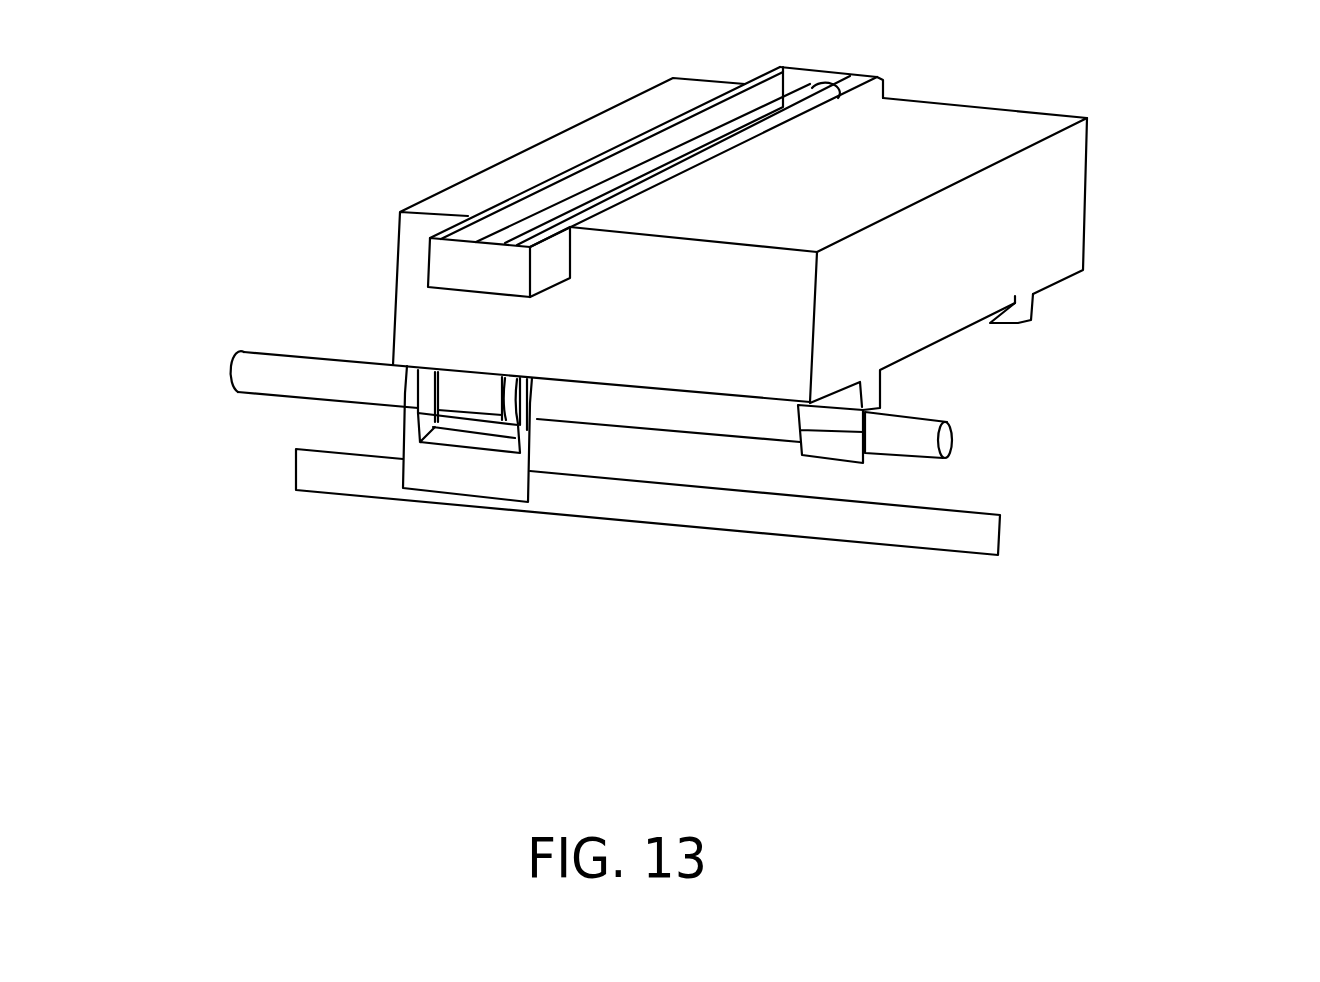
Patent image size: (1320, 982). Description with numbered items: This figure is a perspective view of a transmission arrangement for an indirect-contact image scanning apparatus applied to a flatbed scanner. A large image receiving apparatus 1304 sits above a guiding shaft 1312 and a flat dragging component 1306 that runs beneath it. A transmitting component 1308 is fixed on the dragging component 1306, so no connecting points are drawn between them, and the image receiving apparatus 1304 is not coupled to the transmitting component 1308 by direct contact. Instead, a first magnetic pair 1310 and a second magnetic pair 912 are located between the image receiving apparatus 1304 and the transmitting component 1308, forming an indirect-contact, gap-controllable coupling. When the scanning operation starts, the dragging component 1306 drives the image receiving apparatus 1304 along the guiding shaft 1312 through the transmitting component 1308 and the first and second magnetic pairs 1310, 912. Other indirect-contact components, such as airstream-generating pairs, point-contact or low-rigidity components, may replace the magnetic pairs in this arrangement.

The image receiving apparatus 1304 is at (1062, 202).
The dragging component 1306 is at (940, 533).
The transmitting component 1308 is at (453, 478).
The first magnetic pair 1310 is at (424, 432).
The guiding shaft 1312 is at (923, 427).
The second magnetic pair 912 is at (527, 374).